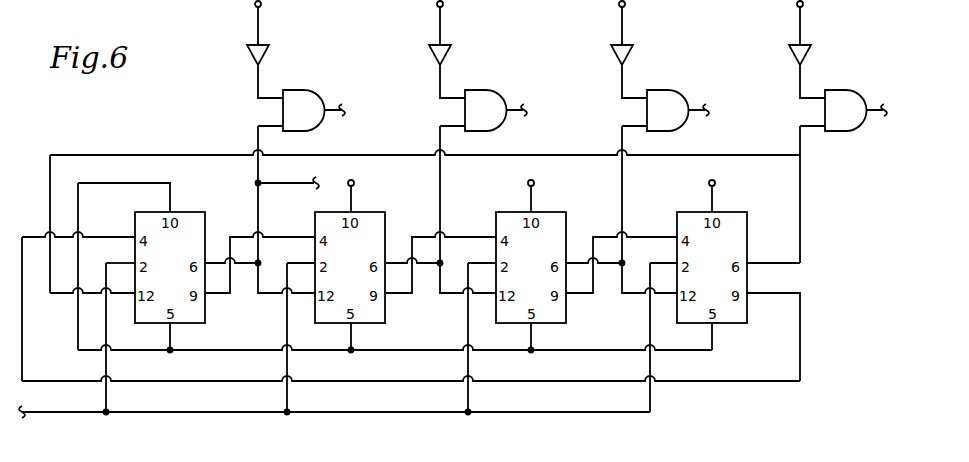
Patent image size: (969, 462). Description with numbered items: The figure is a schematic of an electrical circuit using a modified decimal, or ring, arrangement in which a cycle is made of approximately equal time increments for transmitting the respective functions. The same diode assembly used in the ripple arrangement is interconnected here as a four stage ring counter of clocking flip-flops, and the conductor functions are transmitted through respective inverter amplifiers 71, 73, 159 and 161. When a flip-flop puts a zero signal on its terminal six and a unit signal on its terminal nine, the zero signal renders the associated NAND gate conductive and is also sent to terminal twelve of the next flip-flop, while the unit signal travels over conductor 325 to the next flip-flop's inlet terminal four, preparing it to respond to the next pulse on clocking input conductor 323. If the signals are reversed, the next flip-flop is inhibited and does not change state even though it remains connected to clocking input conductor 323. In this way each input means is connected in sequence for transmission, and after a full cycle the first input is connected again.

The inverter amplifier 71 is at (270, 52).
The inverter amplifier 73 is at (452, 52).
The inverter amplifier 159 is at (634, 52).
The inverter amplifier 161 is at (812, 54).
The clocking input conductor 323 is at (573, 413).
The conductor 325 is at (278, 236).